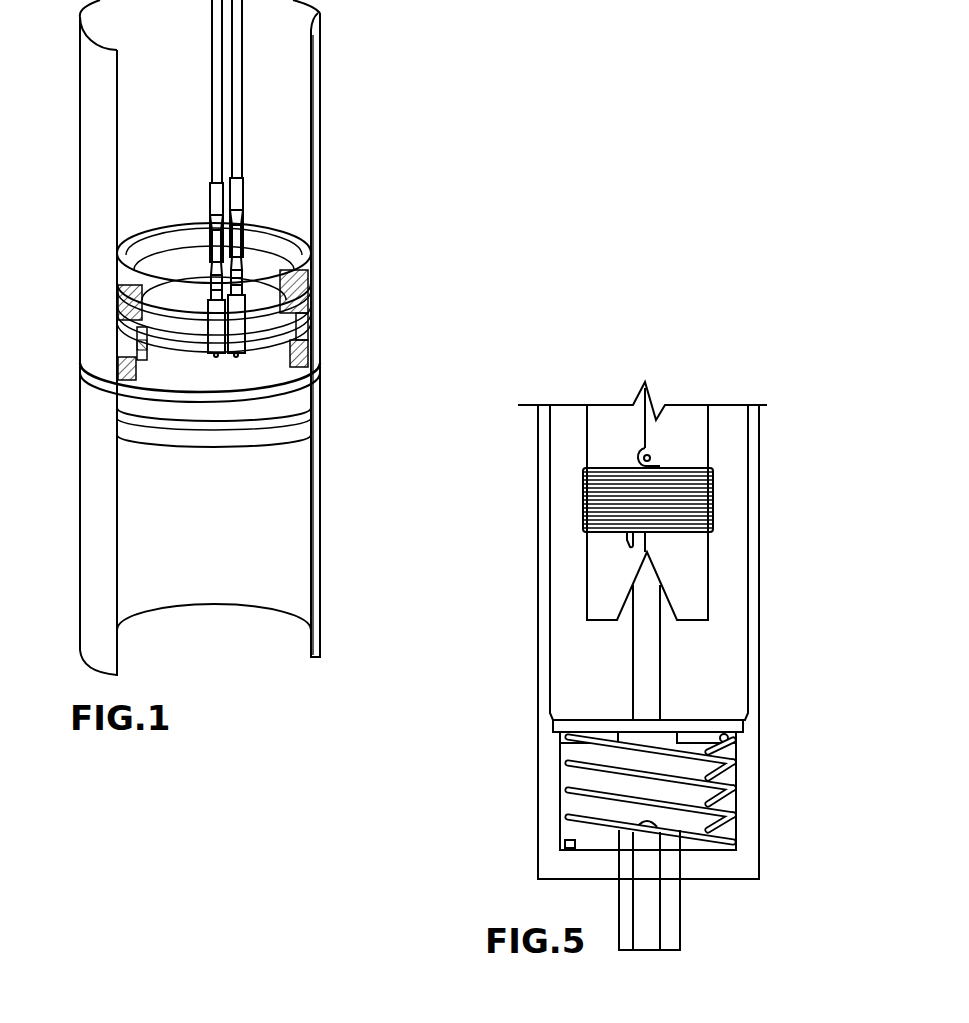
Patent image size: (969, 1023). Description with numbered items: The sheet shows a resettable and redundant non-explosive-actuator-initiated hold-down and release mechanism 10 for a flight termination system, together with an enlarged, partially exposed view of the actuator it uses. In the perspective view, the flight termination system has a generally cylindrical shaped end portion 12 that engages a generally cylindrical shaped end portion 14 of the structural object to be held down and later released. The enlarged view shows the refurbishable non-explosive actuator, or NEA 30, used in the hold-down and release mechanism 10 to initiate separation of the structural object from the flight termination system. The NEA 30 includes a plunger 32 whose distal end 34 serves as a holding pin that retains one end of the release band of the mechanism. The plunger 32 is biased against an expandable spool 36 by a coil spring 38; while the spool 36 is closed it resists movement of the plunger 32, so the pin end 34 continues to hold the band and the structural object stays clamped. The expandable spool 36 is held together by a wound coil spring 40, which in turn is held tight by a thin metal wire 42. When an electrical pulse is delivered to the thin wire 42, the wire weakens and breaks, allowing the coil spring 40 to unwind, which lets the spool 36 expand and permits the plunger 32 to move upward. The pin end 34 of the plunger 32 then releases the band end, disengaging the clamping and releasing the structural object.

In FIG. 1, the hold-down and release mechanism 10 is at (342, 253).
In FIG. 1, the end portion of the flight termination system 12 is at (81, 145).
In FIG. 1, the end portion of the structural object 14 is at (313, 486).
In FIG. 5, the non-explosive actuator 30 is at (495, 735).
In FIG. 5, the plunger 32 is at (641, 663).
In FIG. 5, the distal end 34 is at (672, 920).
In FIG. 5, the expandable spool 36 is at (597, 555).
In FIG. 5, the coil spring 38 is at (710, 780).
In FIG. 5, the wound coil spring 40 is at (712, 490).
In FIG. 5, the thin metal wire 42 is at (648, 440).